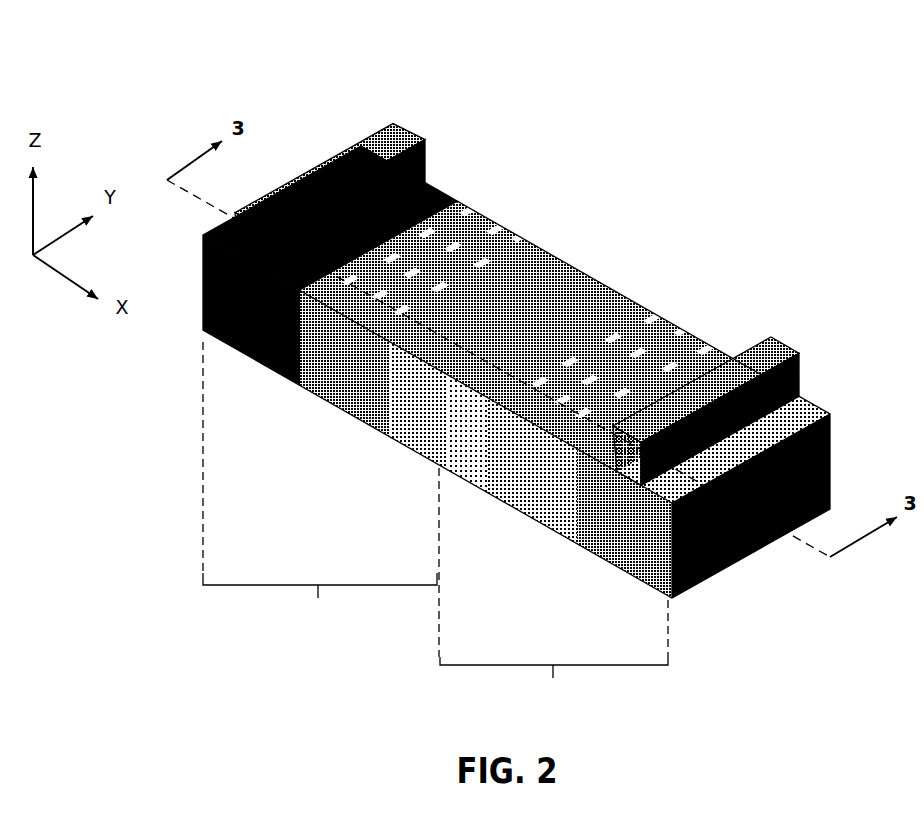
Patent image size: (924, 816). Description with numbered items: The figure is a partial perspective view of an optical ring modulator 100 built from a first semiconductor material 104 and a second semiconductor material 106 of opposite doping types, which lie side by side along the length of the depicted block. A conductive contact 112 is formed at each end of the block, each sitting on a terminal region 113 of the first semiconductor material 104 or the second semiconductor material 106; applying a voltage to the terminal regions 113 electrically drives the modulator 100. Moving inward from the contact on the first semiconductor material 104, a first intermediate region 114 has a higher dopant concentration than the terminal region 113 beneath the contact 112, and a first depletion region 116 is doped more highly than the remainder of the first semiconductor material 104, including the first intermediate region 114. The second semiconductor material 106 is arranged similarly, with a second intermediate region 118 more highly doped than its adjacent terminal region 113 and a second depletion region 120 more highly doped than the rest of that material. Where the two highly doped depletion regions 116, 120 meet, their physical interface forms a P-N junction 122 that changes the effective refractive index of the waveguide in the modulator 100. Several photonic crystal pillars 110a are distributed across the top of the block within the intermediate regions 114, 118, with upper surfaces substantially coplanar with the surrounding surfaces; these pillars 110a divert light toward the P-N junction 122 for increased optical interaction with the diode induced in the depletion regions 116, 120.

The optical ring modulator 100 is at (521, 319).
The first semiconductor material 104 is at (321, 499).
The second semiconductor material 106 is at (554, 651).
The photonic crystal pillars 110a is at (468, 208).
The conductive contact 112 is at (394, 118).
The terminal region 113 is at (273, 347).
The first intermediate region 114 is at (352, 388).
The first depletion region 116 is at (413, 432).
The second intermediate region 118 is at (527, 493).
The second depletion region 120 is at (467, 463).
The P-N junction 122 is at (575, 288).